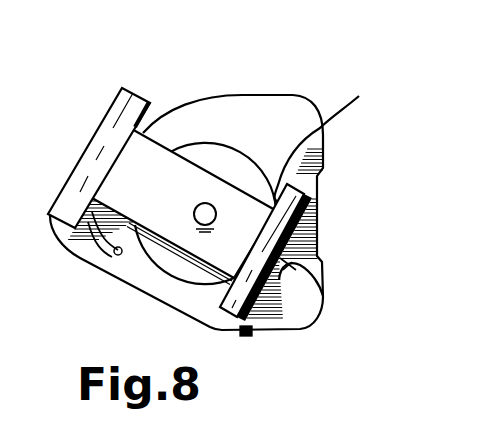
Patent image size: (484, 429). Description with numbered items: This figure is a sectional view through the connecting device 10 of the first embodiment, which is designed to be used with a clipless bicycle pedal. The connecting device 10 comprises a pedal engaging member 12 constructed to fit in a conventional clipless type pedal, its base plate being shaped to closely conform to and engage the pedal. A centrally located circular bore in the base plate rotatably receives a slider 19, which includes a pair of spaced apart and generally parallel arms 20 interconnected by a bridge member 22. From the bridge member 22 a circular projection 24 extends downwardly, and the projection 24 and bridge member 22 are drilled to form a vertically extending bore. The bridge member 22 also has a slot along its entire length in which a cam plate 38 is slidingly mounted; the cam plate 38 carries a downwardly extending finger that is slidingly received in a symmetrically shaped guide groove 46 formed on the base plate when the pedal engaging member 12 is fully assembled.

The connecting device 10 is at (75, 141).
The pedal engaging member 12 is at (221, 95).
The slider 19 is at (326, 138).
The arms 20 is at (128, 91).
The bridge member 22 is at (165, 195).
The circular projection 24 is at (240, 148).
The cam plate 38 is at (279, 280).
The guide groove 46 is at (120, 255).